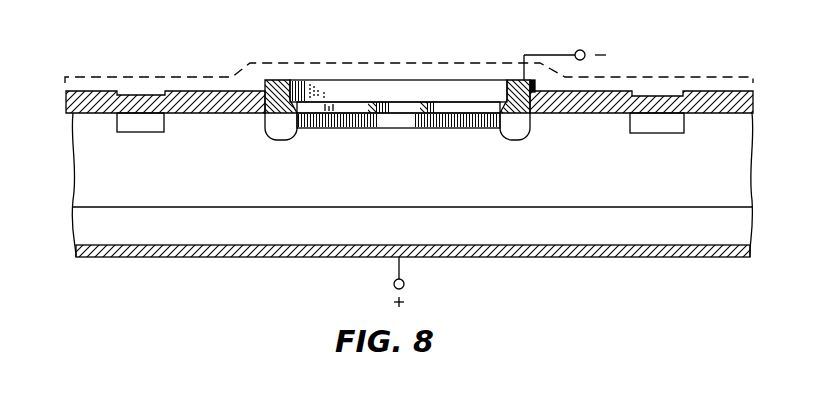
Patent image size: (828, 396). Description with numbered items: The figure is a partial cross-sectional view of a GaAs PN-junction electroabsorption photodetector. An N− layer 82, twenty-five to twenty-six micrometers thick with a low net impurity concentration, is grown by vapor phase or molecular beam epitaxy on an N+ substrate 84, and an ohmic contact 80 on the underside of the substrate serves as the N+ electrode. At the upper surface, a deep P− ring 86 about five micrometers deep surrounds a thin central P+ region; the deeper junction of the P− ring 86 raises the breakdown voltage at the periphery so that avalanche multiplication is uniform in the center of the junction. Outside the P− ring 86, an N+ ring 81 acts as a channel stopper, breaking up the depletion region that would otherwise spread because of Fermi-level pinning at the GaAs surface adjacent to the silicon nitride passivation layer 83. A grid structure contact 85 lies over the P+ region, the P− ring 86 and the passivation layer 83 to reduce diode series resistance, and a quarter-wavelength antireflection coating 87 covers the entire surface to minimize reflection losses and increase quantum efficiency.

The ohmic contact 80 is at (435, 257).
The N+ ring 81 is at (137, 132).
The N− layer 82 is at (606, 181).
The passivation layer 83 is at (84, 91).
The N+ substrate 84 is at (333, 226).
The grid structure contact 85 is at (375, 80).
The P− ring 86 is at (278, 140).
The antireflection coating 87 is at (125, 77).